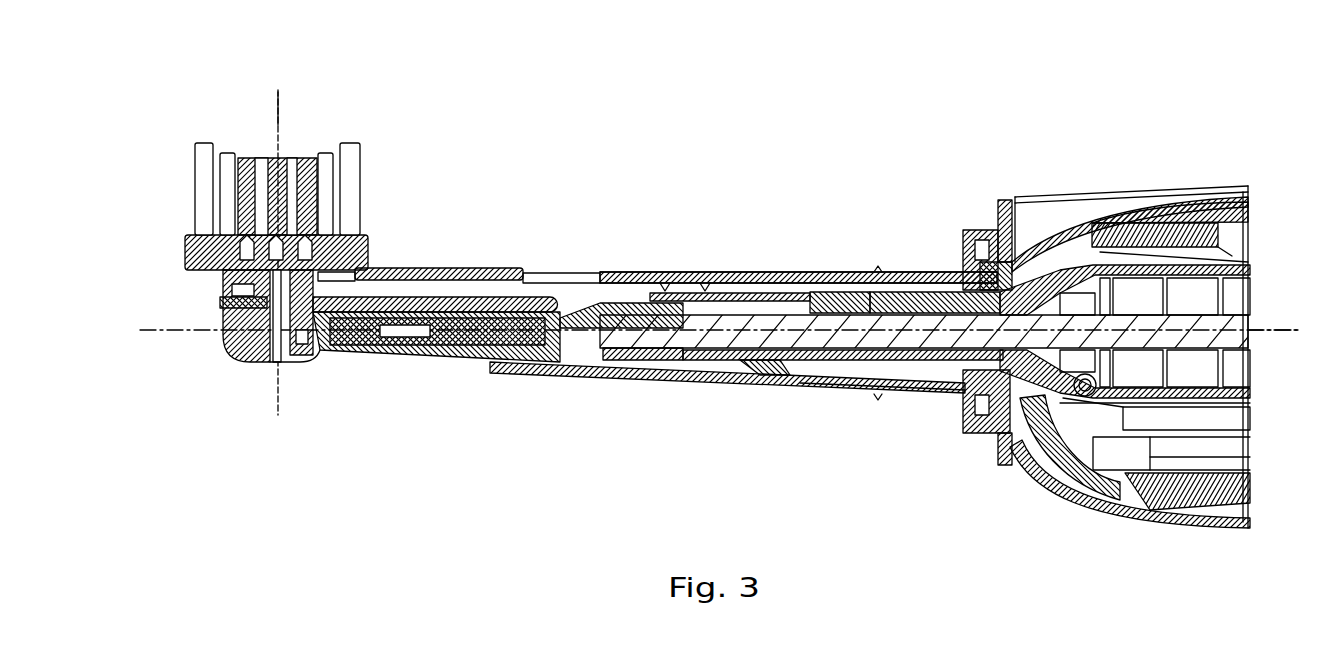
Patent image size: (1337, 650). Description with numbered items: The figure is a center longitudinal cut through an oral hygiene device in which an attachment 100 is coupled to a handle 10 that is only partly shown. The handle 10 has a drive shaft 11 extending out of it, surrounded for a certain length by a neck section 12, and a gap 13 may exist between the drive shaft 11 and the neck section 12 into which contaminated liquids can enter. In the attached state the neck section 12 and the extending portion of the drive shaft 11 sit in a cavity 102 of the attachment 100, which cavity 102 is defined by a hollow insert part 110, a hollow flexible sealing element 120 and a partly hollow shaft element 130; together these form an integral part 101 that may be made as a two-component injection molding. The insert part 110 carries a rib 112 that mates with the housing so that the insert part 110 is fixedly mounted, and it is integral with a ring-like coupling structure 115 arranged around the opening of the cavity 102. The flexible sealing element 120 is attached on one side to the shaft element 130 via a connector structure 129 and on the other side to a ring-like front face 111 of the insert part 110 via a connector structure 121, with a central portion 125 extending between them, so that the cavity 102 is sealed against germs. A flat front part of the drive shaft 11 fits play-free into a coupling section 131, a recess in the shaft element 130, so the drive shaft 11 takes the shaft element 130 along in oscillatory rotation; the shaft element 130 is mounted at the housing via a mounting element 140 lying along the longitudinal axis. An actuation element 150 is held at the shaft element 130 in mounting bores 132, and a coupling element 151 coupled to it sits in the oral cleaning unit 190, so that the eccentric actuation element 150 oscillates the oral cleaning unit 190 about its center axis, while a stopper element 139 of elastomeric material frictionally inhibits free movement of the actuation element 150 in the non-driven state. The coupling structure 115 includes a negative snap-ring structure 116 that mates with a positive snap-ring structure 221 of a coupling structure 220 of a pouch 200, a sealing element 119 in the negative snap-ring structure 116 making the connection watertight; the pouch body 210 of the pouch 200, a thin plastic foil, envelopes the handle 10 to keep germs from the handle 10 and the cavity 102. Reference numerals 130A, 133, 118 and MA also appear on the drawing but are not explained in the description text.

The attachment 100 is at (535, 88).
The oral cleaning unit 190 is at (339, 108).
The axis 130A is at (278, 117).
The coupling element 151 is at (278, 380).
The mounting element 140 is at (335, 360).
The body 133 is at (433, 350).
The mounting bores 132 is at (460, 292).
The actuation element 150 is at (506, 270).
The shaft element 130 is at (566, 300).
The stopper element 139 is at (515, 330).
The coupling section 131 is at (600, 370).
The central portion 125 is at (690, 380).
The inner sleeve 118 is at (627, 340).
The cavity 102 is at (737, 400).
The connector structure 121 is at (783, 395).
The ring-like front face 111 is at (825, 395).
The neck section 12 is at (866, 400).
The rib 112 is at (897, 400).
The integral part 101 is at (626, 270).
The connector structure 129 is at (660, 270).
The flexible sealing element 120 is at (705, 270).
The insert part 110 is at (811, 270).
The gap 13 is at (828, 270).
The drive shaft 11 is at (846, 270).
The coupling structure 115 is at (963, 252).
The positive snap-ring structure 221 is at (975, 232).
The coupling structure 220 is at (1002, 200).
The negative snap-ring structure 116 is at (965, 432).
The sealing element 119 is at (985, 440).
The pouch 200 is at (1080, 172).
The pouch body 210 is at (1130, 192).
The handle 10 is at (1147, 525).
The main axis MA is at (1262, 335).